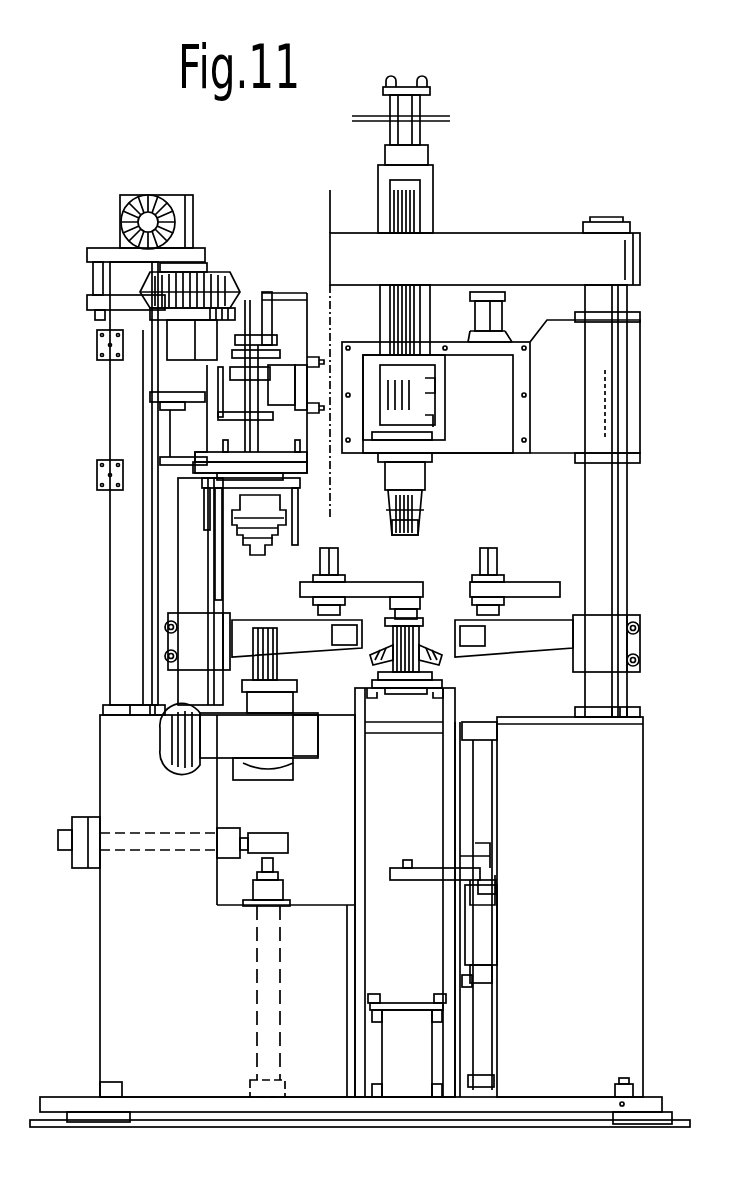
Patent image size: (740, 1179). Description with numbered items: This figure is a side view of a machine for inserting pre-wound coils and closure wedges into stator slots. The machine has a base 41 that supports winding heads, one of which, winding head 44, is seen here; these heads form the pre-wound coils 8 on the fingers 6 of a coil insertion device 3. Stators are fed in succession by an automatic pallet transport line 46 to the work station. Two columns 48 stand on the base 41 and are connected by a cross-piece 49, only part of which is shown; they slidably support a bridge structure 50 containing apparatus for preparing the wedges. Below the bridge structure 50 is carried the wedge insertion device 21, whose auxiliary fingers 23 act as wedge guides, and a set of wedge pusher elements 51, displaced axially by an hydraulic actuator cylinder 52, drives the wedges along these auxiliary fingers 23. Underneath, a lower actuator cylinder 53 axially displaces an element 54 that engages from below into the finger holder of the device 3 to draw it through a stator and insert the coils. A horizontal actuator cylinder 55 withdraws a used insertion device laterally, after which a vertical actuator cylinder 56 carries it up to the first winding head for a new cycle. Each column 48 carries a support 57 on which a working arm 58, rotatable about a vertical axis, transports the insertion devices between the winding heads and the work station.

The coil insertion device 3 is at (388, 617).
The fingers 6 is at (394, 640).
The pre-wound coils 8 is at (383, 654).
The wedge insertion device 21 is at (425, 525).
The auxiliary fingers 23 is at (393, 522).
The base 41 is at (125, 947).
The winding head 44 is at (198, 520).
The automatic pallet transport line 46 is at (460, 695).
The columns 48 is at (615, 500).
The cross-piece 49 is at (517, 246).
The bridge structure 50 is at (563, 463).
The wedge pusher elements 51 is at (400, 311).
The hydraulic actuator cylinder 52 is at (402, 137).
The lower actuator cylinder 53 is at (497, 912).
The element 54 is at (403, 865).
The horizontal actuator cylinder 55 is at (156, 843).
The vertical actuator cylinder 56 is at (263, 1020).
The support 57 is at (294, 634).
The working arm 58 is at (536, 585).